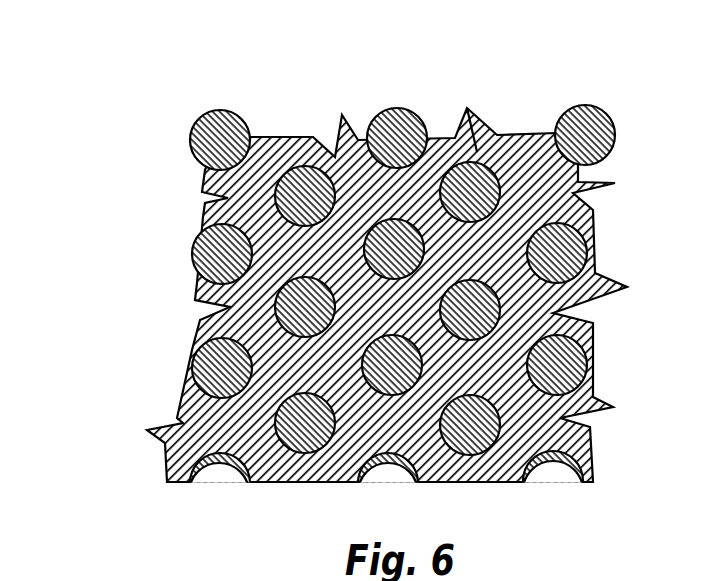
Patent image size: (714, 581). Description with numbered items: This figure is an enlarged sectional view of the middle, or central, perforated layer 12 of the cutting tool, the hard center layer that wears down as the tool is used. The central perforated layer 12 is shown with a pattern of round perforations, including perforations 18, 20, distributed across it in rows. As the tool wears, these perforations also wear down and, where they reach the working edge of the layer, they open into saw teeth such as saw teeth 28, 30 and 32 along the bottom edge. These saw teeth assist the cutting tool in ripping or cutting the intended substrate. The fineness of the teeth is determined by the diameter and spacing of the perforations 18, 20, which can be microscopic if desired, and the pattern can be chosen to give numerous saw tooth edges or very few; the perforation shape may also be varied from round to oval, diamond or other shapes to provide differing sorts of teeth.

The central perforated layer 12 is at (312, 137).
The perforation 18 is at (228, 198).
The perforation 20 is at (230, 307).
The saw tooth 28 is at (211, 500).
The saw tooth 30 is at (377, 490).
The saw tooth 32 is at (545, 482).